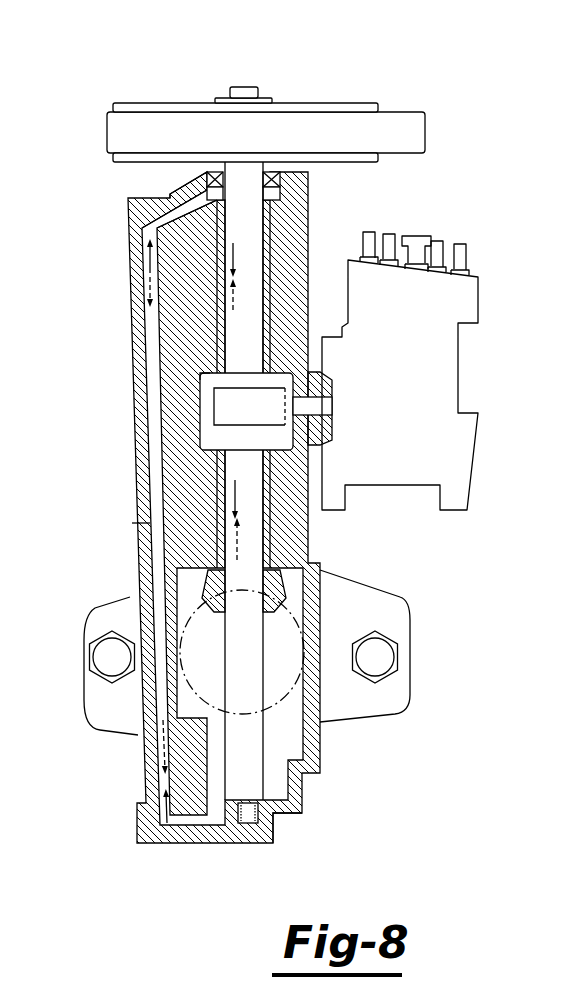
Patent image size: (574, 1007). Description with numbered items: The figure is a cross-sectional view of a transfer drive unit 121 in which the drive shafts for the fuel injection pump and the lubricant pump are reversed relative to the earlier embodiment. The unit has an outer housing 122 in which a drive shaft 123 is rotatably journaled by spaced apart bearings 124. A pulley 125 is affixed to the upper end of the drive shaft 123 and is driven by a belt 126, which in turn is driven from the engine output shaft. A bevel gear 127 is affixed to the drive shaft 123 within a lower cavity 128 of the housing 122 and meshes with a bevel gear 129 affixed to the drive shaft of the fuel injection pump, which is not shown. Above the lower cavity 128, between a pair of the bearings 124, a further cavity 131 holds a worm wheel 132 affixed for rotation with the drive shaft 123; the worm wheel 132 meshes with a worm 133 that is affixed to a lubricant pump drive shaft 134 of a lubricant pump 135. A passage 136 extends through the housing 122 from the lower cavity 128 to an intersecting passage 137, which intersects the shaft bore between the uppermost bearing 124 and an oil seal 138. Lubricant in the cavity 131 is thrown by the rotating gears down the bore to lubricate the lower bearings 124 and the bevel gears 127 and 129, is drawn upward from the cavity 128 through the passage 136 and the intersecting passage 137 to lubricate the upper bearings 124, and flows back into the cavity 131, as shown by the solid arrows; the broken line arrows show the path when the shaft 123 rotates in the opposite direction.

The transfer drive unit 121 is at (124, 222).
The outer housing 122 is at (128, 275).
The drive shaft 123 is at (255, 255).
The bearings 124 is at (268, 232).
The pulley 125 is at (360, 103).
The belt 126 is at (408, 132).
The bevel gear 127 is at (312, 600).
The lower cavity 128 is at (318, 740).
The bevel gear 129 is at (318, 742).
The cavity 131 is at (223, 405).
The worm wheel 132 is at (218, 437).
The worm 133 is at (203, 398).
The lubricant pump drive shaft 134 is at (318, 405).
The lubricant pump 135 is at (443, 368).
The passage 136 is at (150, 523).
The intersecting passage 137 is at (183, 197).
The oil seal 138 is at (305, 186).